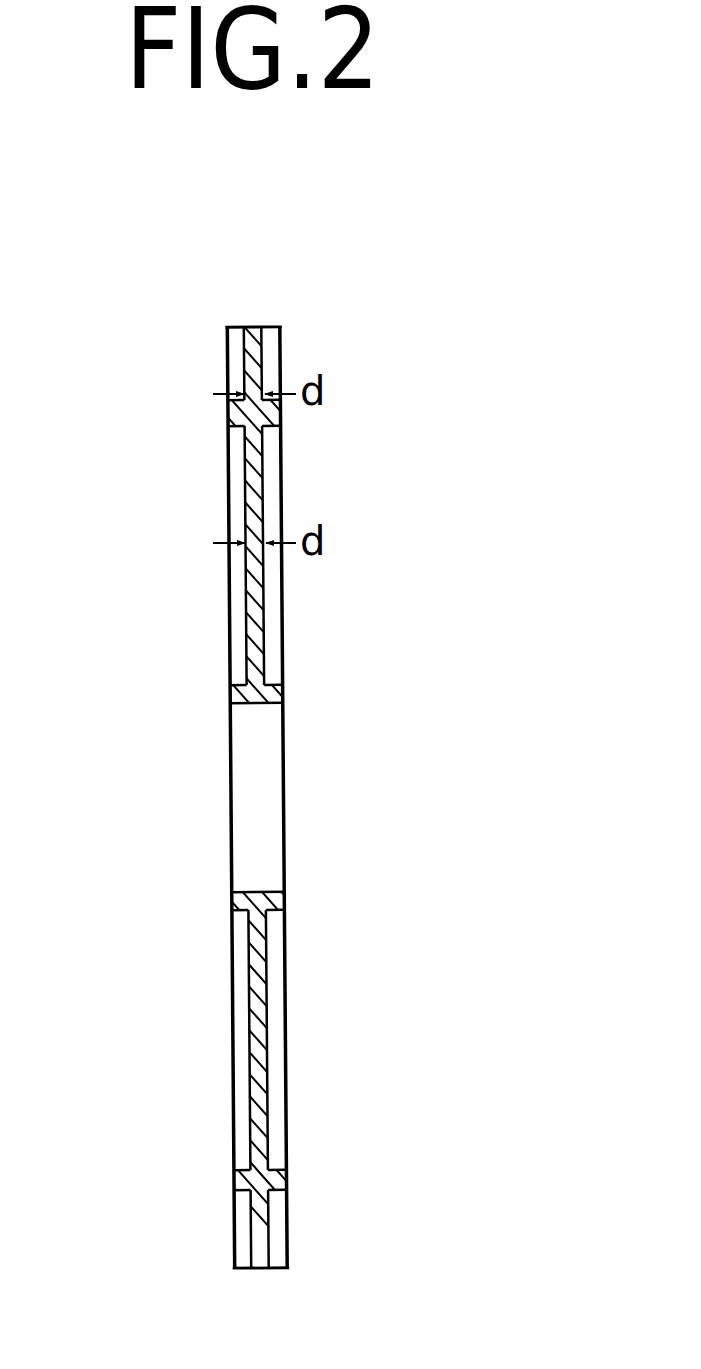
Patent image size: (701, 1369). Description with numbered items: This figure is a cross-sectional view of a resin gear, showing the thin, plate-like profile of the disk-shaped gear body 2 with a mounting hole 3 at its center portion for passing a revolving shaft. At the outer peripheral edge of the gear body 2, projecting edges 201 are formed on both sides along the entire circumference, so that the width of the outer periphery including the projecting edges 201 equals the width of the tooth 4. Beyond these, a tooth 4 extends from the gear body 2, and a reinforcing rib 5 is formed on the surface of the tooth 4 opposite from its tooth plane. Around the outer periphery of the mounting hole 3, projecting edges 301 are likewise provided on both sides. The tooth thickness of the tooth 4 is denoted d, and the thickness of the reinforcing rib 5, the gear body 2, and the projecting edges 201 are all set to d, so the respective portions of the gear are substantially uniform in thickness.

The gear body 2 is at (263, 623).
The projecting edges 201 is at (226, 414).
The mounting hole 3 is at (283, 793).
The projecting edges 301 is at (232, 687).
The tooth 4 is at (280, 327).
The reinforcing rib 5 is at (259, 351).